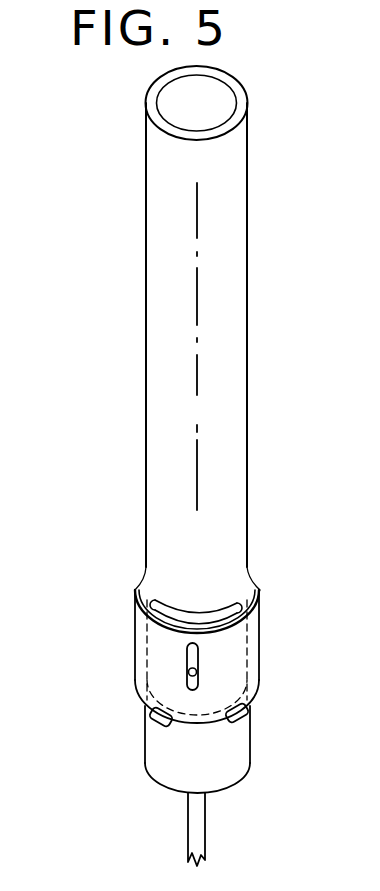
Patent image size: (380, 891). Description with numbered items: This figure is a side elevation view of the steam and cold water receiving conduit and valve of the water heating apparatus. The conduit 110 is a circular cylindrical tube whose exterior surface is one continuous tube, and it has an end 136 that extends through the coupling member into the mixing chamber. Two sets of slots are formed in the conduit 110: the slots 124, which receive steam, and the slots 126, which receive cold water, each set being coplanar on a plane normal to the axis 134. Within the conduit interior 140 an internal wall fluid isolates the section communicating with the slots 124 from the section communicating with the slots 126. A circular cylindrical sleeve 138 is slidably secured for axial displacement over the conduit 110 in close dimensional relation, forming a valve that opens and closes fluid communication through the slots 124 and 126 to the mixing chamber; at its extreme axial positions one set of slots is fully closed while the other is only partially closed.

The conduit 110 is at (120, 280).
The axis 134 is at (197, 392).
The slots 124 is at (222, 570).
The sleeve 138 is at (132, 640).
The slots 126 is at (145, 712).
The end 136 is at (235, 750).
The conduit interior 140 is at (198, 843).